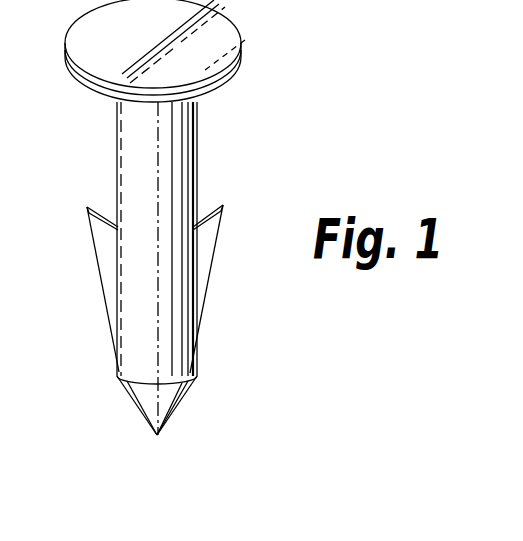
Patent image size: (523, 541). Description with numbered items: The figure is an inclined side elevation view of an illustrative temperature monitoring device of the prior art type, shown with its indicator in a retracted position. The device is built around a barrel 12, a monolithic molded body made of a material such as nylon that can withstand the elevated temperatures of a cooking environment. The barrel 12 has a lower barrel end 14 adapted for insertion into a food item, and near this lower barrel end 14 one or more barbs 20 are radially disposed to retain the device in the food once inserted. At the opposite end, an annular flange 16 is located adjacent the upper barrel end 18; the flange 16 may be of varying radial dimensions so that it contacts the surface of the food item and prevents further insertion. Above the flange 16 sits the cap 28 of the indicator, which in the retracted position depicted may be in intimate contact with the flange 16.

The barrel 12 is at (120, 172).
The lower barrel end 14 is at (147, 390).
The annular flange 16 is at (222, 85).
The upper barrel end 18 is at (135, 132).
The barbs 20 is at (102, 233).
The cap 28 is at (217, 48).